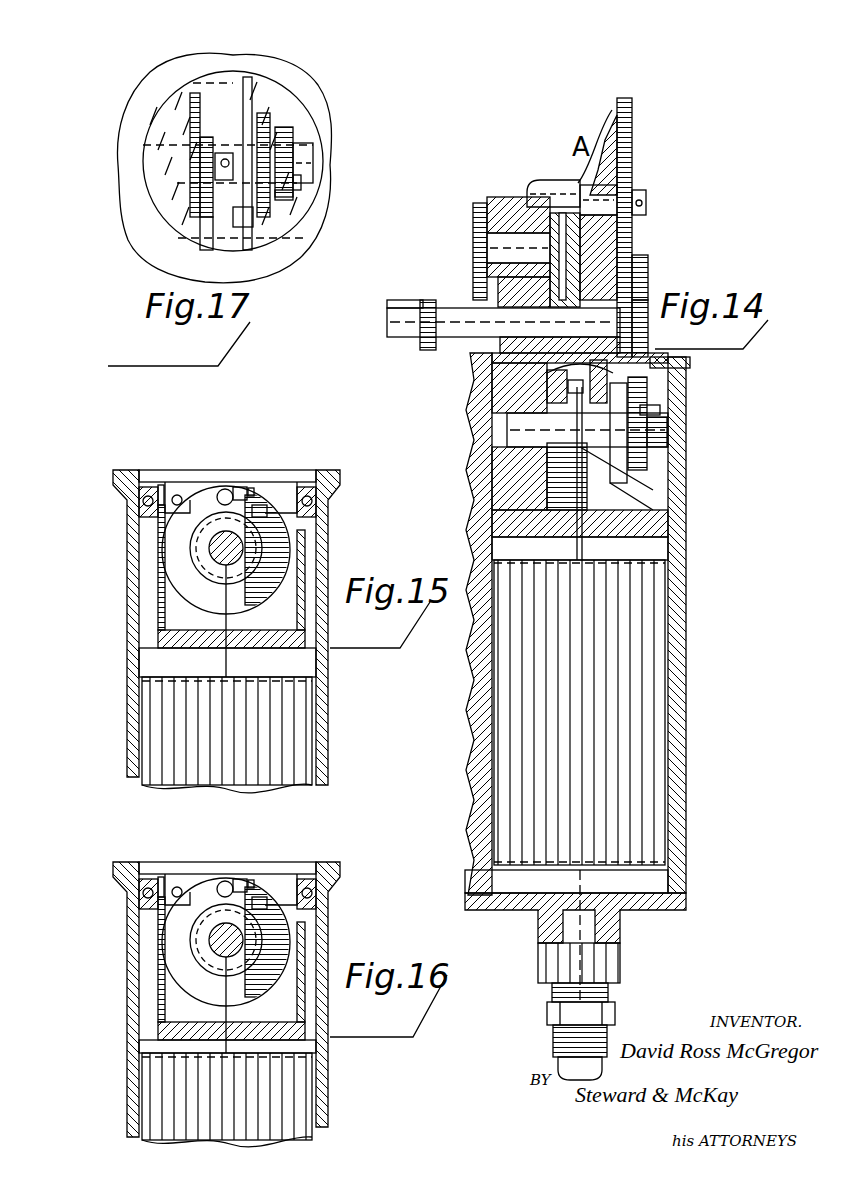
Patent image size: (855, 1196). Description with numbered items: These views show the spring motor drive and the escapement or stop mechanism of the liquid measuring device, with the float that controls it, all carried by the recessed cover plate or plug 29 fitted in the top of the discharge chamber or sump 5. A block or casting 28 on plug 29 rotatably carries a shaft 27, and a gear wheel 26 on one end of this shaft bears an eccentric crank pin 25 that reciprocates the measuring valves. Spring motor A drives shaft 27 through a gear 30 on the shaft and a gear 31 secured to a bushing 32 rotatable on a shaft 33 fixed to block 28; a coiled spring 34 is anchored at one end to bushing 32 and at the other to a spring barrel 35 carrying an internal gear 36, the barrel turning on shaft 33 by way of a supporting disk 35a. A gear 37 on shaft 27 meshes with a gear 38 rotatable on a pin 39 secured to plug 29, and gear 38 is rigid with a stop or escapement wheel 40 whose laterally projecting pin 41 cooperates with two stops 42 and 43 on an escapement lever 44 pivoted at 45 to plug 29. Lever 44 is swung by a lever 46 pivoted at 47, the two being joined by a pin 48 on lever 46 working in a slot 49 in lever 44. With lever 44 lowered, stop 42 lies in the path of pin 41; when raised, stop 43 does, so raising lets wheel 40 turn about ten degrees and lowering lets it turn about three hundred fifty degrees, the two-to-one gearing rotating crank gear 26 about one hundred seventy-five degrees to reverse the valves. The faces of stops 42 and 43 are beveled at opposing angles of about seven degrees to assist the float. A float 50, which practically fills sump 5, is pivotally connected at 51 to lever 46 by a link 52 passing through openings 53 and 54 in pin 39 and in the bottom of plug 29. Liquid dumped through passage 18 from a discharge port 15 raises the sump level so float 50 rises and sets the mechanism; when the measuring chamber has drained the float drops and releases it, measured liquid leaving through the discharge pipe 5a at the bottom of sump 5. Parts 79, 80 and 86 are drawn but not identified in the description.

In FIG. 14, the discharge chamber 5 is at (672, 673).
In FIG. 14, the discharge pipe 5a is at (607, 1013).
In FIG. 14, the discharge port 15 is at (643, 290).
In FIG. 14, the passage 18 is at (497, 882).
In FIG. 14, the crank pin 25 is at (390, 305).
In FIG. 14, the gear wheel 26 is at (425, 345).
In FIG. 14, the shaft 27 is at (455, 327).
In FIG. 14, the block 28 is at (500, 357).
In FIG. 17, the cover plate 29 is at (160, 130).
In FIG. 14, the cover plate 29 is at (665, 483).
In FIG. 15, the cover plate 29 is at (300, 540).
In FIG. 16, the cover plate 29 is at (251, 999).
In FIG. 14, the gear 30 is at (647, 320).
In FIG. 14, the gear 31 is at (630, 127).
In FIG. 14, the bushing 32 is at (607, 193).
In FIG. 14, the shaft 33 is at (640, 200).
In FIG. 14, the coiled spring 34 is at (625, 160).
In FIG. 14, the spring barrel 35 is at (557, 230).
In FIG. 14, the supporting disk 35a is at (580, 187).
In FIG. 14, the internal gear 36 is at (497, 257).
In FIG. 14, the gear 37 is at (645, 300).
In FIG. 17, the gear 38 is at (290, 133).
In FIG. 14, the gear 38 is at (648, 418).
In FIG. 15, the gear 38 is at (200, 550).
In FIG. 16, the gear 38 is at (156, 944).
In FIG. 17, the pin 39 is at (305, 170).
In FIG. 14, the pin 39 is at (500, 443).
In FIG. 15, the pin 39 is at (267, 545).
In FIG. 16, the pin 39 is at (149, 969).
In FIG. 17, the escapement wheel 40 is at (270, 118).
In FIG. 14, the escapement wheel 40 is at (647, 467).
In FIG. 15, the escapement wheel 40 is at (198, 583).
In FIG. 16, the escapement wheel 40 is at (182, 957).
In FIG. 17, the projecting pin 41 is at (282, 198).
In FIG. 14, the projecting pin 41 is at (652, 412).
In FIG. 15, the projecting pin 41 is at (225, 489).
In FIG. 16, the projecting pin 41 is at (243, 846).
In FIG. 17, the stop 42 is at (297, 182).
In FIG. 15, the stop 42 is at (240, 487).
In FIG. 16, the stop 42 is at (233, 854).
In FIG. 17, the stop 43 is at (252, 137).
In FIG. 15, the stop 43 is at (262, 505).
In FIG. 16, the stop 43 is at (272, 860).
In FIG. 17, the escapement lever 44 is at (247, 140).
In FIG. 14, the escapement lever 44 is at (543, 393).
In FIG. 15, the escapement lever 44 is at (313, 477).
In FIG. 16, the escapement lever 44 is at (260, 867).
In FIG. 17, the pivot 45 is at (243, 85).
In FIG. 15, the pivot 45 is at (330, 497).
In FIG. 16, the pivot 45 is at (340, 891).
In FIG. 17, the lever 46 is at (205, 193).
In FIG. 14, the lever 46 is at (575, 393).
In FIG. 15, the lever 46 is at (160, 497).
In FIG. 16, the lever 46 is at (117, 916).
In FIG. 17, the pivot 47 is at (205, 233).
In FIG. 15, the pivot 47 is at (138, 503).
In FIG. 16, the pivot 47 is at (111, 888).
In FIG. 17, the pin 48 is at (245, 227).
In FIG. 15, the pin 48 is at (177, 497).
In FIG. 16, the pin 48 is at (143, 856).
In FIG. 15, the slot 49 is at (150, 528).
In FIG. 16, the slot 49 is at (168, 866).
In FIG. 14, the float 50 is at (643, 773).
In FIG. 15, the float 50 is at (287, 743).
In FIG. 16, the float 50 is at (188, 1100).
In FIG. 17, the pivotal connection 51 is at (222, 165).
In FIG. 14, the pivotal connection 51 is at (580, 390).
In FIG. 15, the pivotal connection 51 is at (253, 490).
In FIG. 16, the pivotal connection 51 is at (223, 842).
In FIG. 14, the connecting rod 52 is at (585, 543).
In FIG. 15, the connecting rod 52 is at (227, 663).
In FIG. 16, the connecting rod 52 is at (195, 1055).
In FIG. 14, the opening 53 is at (637, 493).
In FIG. 15, the opening 53 is at (277, 580).
In FIG. 16, the opening 53 is at (273, 968).
In FIG. 14, the opening 54 is at (580, 533).
In FIG. 15, the opening 54 is at (243, 647).
In FIG. 16, the opening 54 is at (308, 1015).
In FIG. 14, the bearing housing 79 is at (503, 240).
In FIG. 14, the gear 80 is at (478, 215).
In FIG. 14, the pin 86 is at (563, 227).